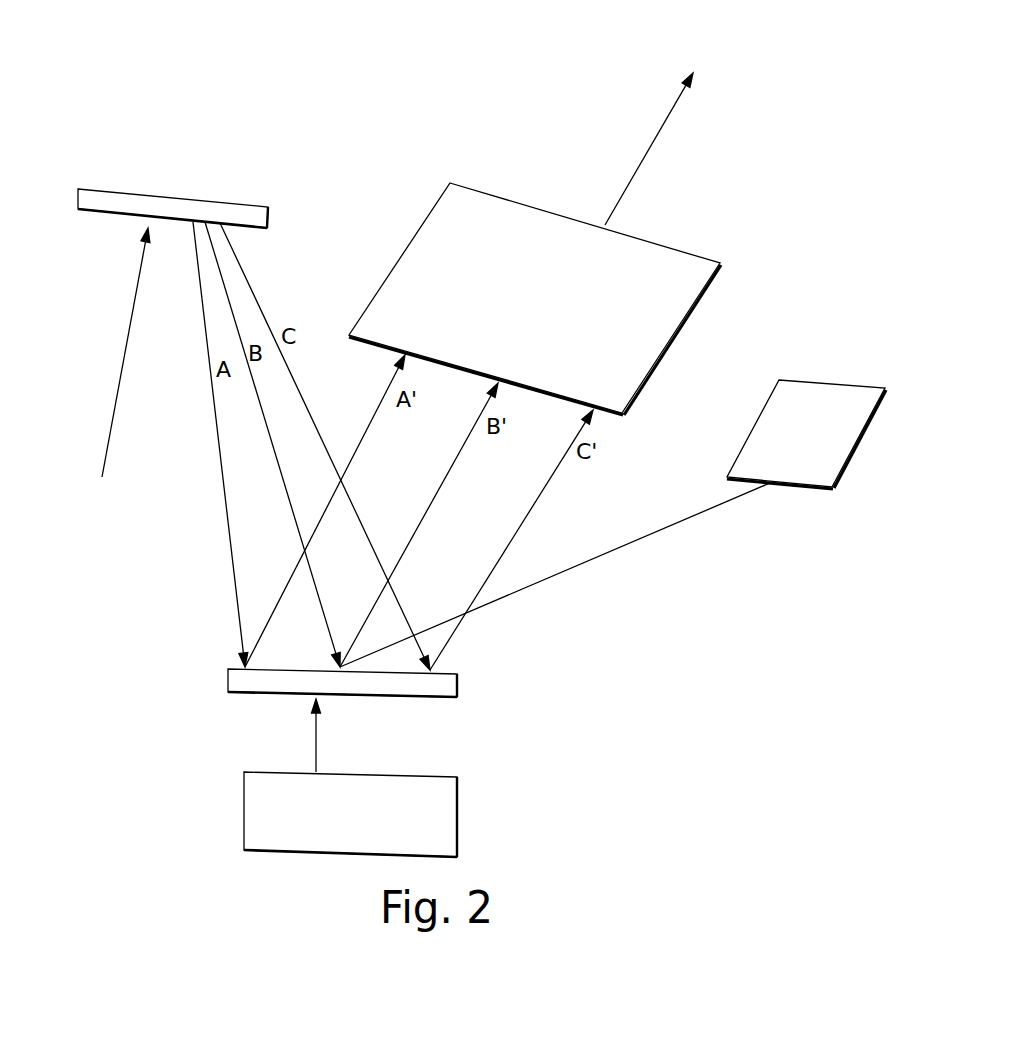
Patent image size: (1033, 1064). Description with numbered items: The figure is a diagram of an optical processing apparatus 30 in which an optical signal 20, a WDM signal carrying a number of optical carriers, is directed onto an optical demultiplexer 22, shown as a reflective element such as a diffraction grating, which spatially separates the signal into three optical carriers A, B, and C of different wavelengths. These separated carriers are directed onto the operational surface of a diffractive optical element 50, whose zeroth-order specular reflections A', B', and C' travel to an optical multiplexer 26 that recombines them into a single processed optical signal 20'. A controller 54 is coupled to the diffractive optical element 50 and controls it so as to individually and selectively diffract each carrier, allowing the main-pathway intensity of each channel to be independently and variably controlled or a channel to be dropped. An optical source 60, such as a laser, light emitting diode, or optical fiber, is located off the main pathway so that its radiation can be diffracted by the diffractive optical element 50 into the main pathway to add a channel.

The optical signal 20 is at (112, 352).
The processed optical signal 20' is at (668, 149).
The optical demultiplexer 22 is at (218, 203).
The optical multiplexer 26 is at (363, 343).
The optical processing apparatus 30 is at (449, 96).
The diffractive optical element 50 is at (458, 683).
The controller 54 is at (458, 805).
The optical source 60 is at (795, 381).